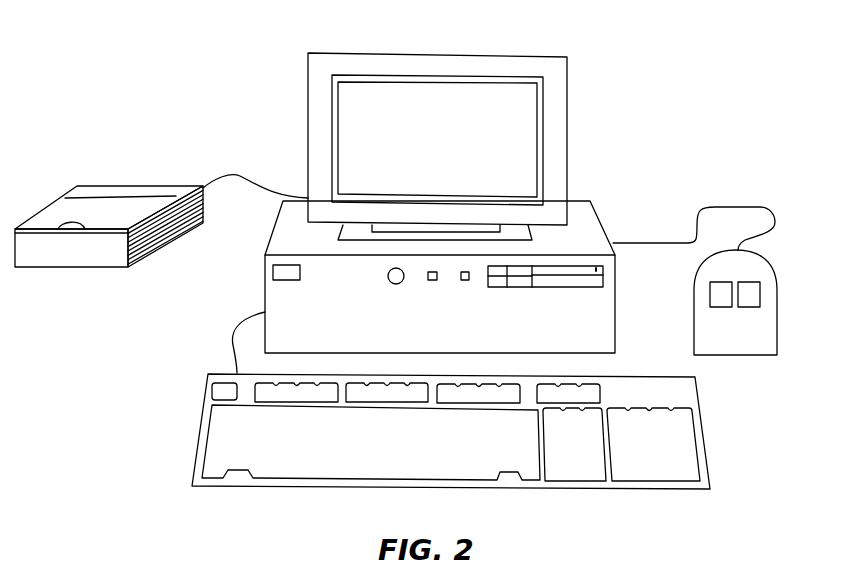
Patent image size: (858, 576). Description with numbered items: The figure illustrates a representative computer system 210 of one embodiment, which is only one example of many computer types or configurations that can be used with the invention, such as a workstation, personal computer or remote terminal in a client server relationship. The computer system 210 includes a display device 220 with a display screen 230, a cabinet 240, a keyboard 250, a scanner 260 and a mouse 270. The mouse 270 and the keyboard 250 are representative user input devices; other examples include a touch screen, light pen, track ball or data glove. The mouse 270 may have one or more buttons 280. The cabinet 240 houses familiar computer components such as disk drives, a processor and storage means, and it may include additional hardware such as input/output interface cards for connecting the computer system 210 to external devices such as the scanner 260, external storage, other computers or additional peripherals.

The computer system 210 is at (684, 45).
The display device 220 is at (568, 125).
The display screen 230 is at (502, 102).
The cabinet 240 is at (582, 228).
The keyboard 250 is at (362, 487).
The scanner 260 is at (55, 267).
The mouse 270 is at (755, 323).
The buttons 280 is at (725, 282).